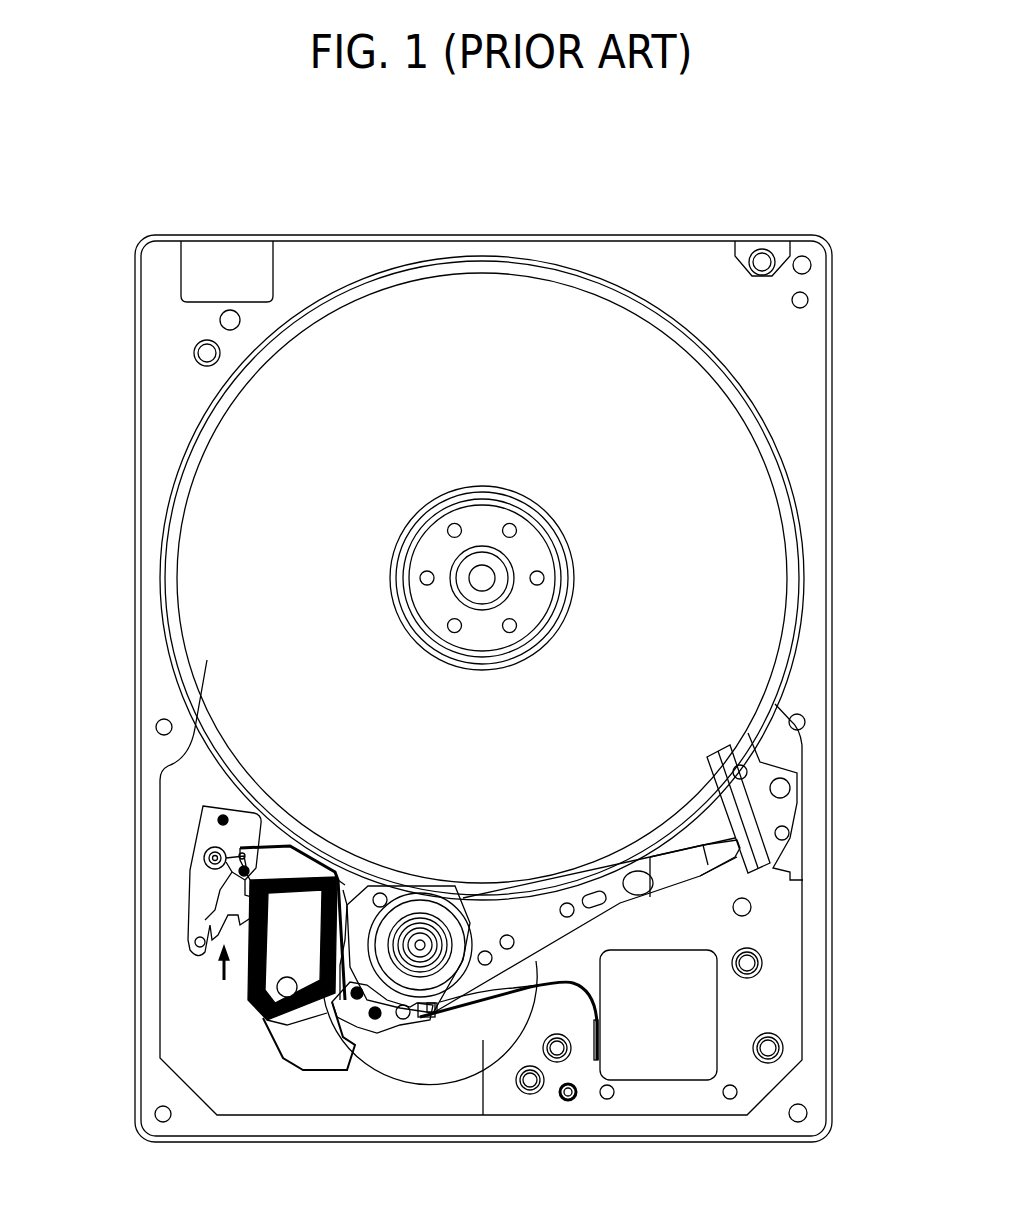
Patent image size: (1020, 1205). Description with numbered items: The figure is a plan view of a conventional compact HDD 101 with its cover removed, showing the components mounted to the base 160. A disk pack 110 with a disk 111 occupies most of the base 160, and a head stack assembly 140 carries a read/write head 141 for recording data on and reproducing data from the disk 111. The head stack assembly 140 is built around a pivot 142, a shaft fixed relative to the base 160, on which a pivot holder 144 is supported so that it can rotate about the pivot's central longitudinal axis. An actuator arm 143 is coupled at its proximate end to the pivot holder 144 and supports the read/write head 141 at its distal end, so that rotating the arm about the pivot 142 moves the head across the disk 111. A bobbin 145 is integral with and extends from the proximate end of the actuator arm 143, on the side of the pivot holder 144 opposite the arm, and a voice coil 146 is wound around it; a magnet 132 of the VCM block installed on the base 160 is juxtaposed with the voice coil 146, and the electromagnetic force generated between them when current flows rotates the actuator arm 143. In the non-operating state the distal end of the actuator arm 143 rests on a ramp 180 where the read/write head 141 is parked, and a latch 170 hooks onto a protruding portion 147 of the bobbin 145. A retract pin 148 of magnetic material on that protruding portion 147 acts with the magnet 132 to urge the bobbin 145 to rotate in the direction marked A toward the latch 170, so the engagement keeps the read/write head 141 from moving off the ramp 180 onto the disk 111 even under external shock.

The compact HDD 101 is at (80, 152).
The disk pack 110 is at (798, 502).
The disk 111 is at (748, 553).
The magnet 132 is at (310, 1068).
The head stack assembly 140 is at (551, 965).
The read/write head 141 is at (738, 845).
The pivot 142 is at (422, 950).
The actuator arm 143 is at (615, 900).
The pivot holder 144 is at (380, 1045).
The bobbin 145 is at (243, 985).
The voice coil 146 is at (250, 1005).
The protruding portion 147 is at (236, 897).
The retract pin 148 is at (238, 873).
The base 160 is at (845, 392).
The latch 170 is at (180, 810).
The ramp 180 is at (815, 808).